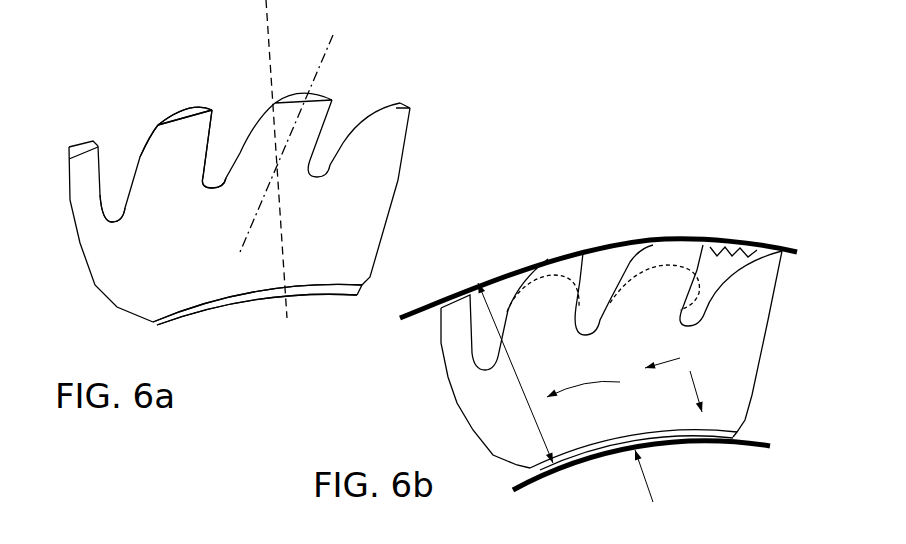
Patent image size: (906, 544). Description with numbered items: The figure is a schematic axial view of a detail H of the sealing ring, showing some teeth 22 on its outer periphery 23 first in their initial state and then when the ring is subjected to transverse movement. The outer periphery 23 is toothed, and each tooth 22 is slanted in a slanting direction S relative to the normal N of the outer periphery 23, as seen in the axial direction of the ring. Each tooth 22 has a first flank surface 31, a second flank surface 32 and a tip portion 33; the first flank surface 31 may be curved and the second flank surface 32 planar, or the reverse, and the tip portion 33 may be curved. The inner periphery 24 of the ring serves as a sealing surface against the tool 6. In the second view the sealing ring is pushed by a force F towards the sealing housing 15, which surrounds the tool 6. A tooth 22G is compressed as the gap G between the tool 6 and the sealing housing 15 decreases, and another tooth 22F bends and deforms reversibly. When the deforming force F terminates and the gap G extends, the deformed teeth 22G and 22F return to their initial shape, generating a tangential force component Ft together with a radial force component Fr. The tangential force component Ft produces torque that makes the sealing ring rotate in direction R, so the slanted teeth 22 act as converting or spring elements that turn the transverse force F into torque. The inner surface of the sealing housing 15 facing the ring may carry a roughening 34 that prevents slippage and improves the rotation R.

In FIG. 6a, the outer periphery 23 is at (428, 67).
In FIG. 6a, the teeth 22 is at (173, 172).
In FIG. 6a, the tip portion 33 is at (192, 103).
In FIG. 6a, the first flank surface 31 is at (132, 163).
In FIG. 6a, the second flank surface 32 is at (203, 163).
In FIG. 6a, the inner periphery 24 is at (240, 303).
In FIG. 6a, the normal N is at (267, 25).
In FIG. 6a, the slanting direction S is at (332, 50).
In FIG. 6a, the detail H is at (79, 71).
In FIG. 6b, the detail H is at (781, 186).
In FIG. 6b, the sealing housing 15 is at (479, 280).
In FIG. 6b, the tool 6 is at (518, 489).
In FIG. 6b, the compressed tooth 22G is at (536, 275).
In FIG. 6b, the bent tooth 22F is at (652, 265).
In FIG. 6b, the roughening 34 is at (722, 243).
In FIG. 6b, the gap G is at (515, 373).
In FIG. 6b, the rotation R is at (583, 377).
In FIG. 6b, the tangential force component Ft is at (662, 353).
In FIG. 6b, the radial force component Fr is at (708, 391).
In FIG. 6b, the force F is at (654, 480).